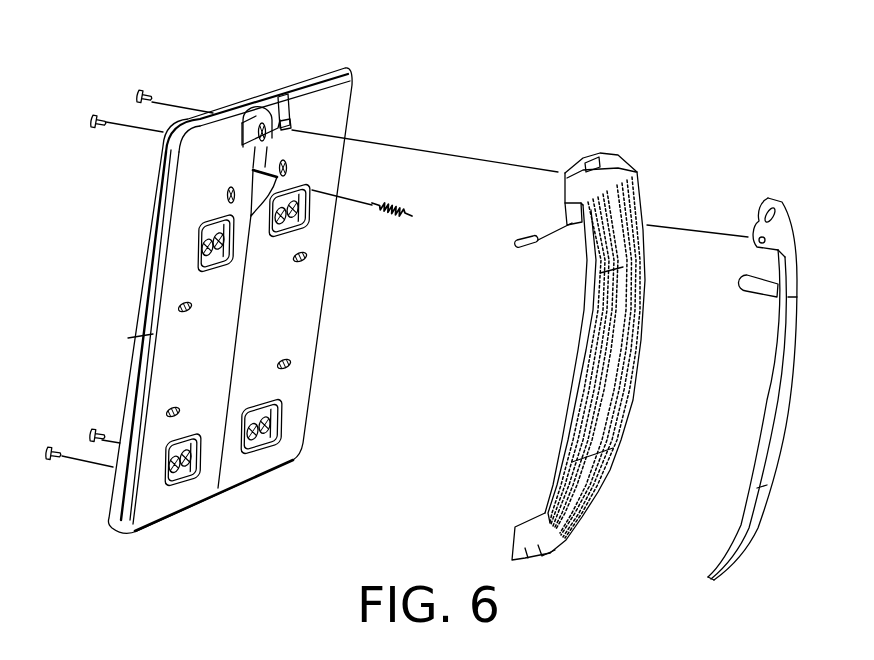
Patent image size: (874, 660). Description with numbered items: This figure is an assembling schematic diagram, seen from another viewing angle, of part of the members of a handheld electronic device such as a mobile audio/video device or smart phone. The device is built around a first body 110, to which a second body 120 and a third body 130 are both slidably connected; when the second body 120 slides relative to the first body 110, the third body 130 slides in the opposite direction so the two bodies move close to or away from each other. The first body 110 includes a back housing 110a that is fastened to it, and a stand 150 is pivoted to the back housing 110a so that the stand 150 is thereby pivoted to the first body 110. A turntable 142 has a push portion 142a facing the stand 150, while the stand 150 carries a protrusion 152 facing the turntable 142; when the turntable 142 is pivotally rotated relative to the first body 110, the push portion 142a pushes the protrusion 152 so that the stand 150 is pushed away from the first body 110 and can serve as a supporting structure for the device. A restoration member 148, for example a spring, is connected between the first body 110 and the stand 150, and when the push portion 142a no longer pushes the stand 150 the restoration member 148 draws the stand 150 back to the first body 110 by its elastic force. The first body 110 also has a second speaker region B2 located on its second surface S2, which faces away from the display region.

The first body 110 is at (157, 210).
The back housing 110a is at (613, 160).
The second body 120 is at (292, 441).
The third body 130 is at (148, 508).
The turntable 142 is at (288, 96).
The push portion 142a is at (286, 160).
The restoration member 148 is at (386, 220).
The stand 150 is at (779, 397).
The protrusion 152 is at (755, 290).
The second surface S2 is at (255, 165).
The second speaker region B2 is at (608, 230).